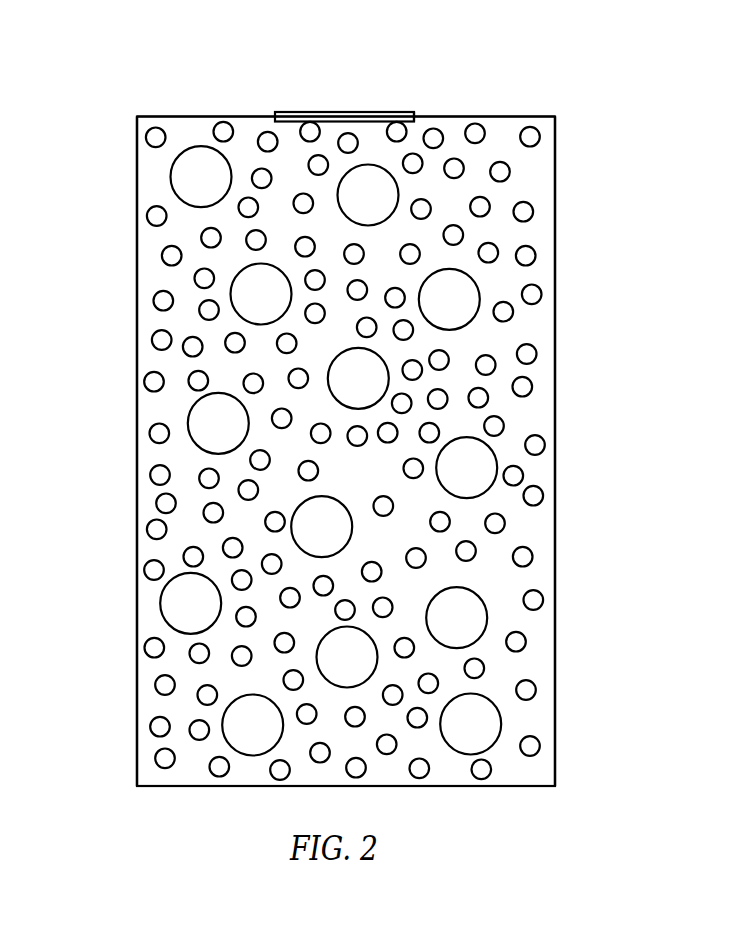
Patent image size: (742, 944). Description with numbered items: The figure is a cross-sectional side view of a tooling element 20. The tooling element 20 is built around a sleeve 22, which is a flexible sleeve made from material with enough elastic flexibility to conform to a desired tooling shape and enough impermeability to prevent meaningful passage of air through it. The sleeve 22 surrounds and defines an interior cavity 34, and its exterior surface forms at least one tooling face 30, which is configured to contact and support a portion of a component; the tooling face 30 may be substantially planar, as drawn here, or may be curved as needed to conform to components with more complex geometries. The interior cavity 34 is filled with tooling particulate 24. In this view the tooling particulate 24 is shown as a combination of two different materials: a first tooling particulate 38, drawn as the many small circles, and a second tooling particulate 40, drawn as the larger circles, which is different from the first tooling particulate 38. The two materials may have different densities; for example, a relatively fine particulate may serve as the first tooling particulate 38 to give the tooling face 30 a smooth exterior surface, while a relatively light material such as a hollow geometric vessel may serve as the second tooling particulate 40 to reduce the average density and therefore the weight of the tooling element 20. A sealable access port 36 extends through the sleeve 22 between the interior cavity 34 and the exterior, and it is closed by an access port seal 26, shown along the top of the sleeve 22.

The tooling element 20 is at (604, 182).
The sleeve 22 is at (556, 287).
The tooling particulate 24 is at (543, 528).
The access port seal 26 is at (366, 112).
The tooling face 30 is at (137, 357).
The interior cavity 34 is at (167, 453).
The sealable access port 36 is at (428, 101).
The first tooling particulate 38 is at (541, 604).
The second tooling particulate 40 is at (182, 612).